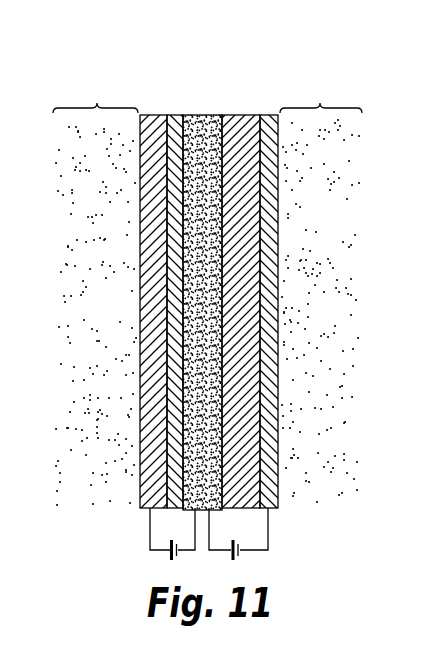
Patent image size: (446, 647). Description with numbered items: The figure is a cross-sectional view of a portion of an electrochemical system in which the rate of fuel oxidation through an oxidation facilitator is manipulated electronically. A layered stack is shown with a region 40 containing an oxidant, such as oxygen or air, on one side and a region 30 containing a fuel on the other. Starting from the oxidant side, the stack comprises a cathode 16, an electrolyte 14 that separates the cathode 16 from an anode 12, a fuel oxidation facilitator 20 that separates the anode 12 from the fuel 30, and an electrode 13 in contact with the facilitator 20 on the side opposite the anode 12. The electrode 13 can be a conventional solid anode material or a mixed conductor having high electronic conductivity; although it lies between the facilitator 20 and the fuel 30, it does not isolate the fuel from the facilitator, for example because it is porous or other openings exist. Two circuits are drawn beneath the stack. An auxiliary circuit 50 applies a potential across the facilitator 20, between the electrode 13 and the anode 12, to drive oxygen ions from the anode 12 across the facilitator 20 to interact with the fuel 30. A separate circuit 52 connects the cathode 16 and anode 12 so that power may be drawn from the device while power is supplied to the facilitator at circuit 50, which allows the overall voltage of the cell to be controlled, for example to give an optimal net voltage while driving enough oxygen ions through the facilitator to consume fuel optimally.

The anode 12 is at (207, 115).
The electrode 13 is at (270, 115).
The electrolyte 14 is at (172, 115).
The cathode 16 is at (152, 115).
The fuel oxidation facilitator 20 is at (240, 115).
The region containing a fuel 30 is at (321, 290).
The region containing an oxidant 40 is at (95, 291).
The auxiliary circuit 50 is at (268, 542).
The circuit 52 is at (150, 545).